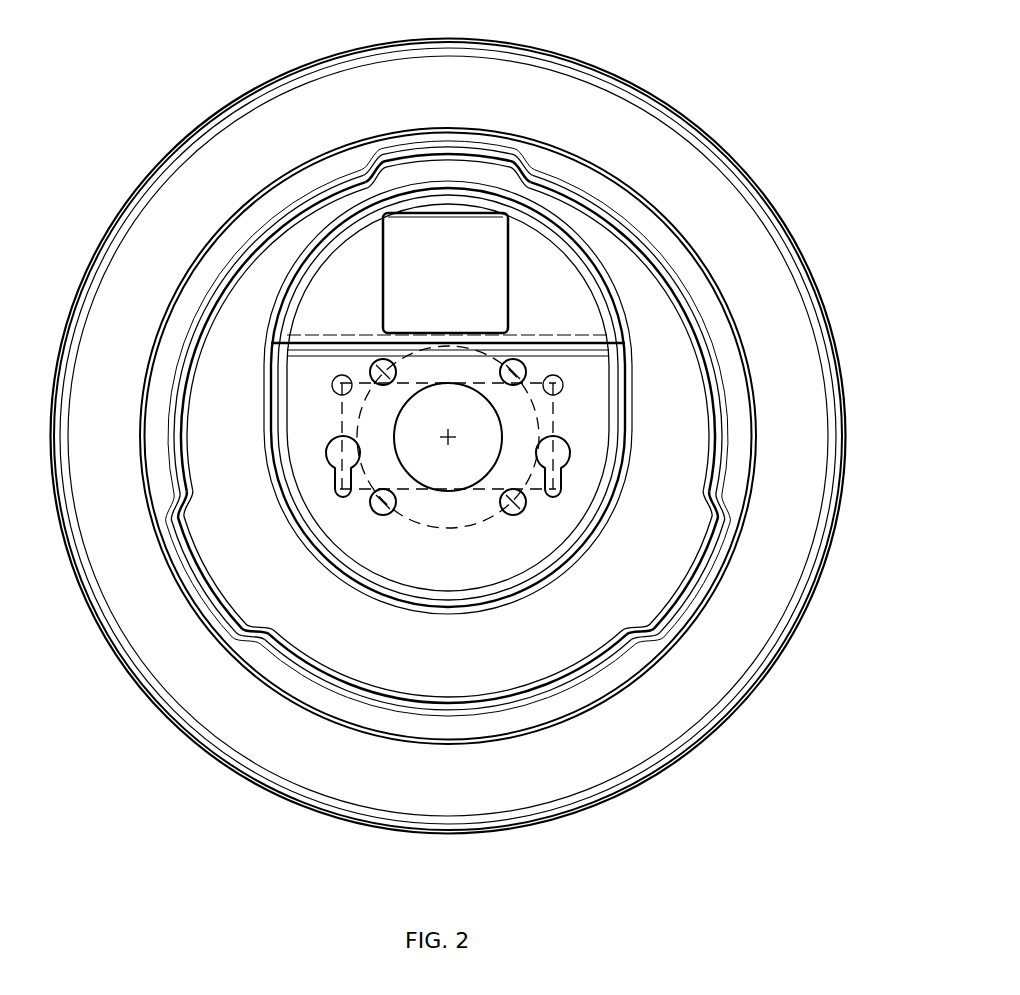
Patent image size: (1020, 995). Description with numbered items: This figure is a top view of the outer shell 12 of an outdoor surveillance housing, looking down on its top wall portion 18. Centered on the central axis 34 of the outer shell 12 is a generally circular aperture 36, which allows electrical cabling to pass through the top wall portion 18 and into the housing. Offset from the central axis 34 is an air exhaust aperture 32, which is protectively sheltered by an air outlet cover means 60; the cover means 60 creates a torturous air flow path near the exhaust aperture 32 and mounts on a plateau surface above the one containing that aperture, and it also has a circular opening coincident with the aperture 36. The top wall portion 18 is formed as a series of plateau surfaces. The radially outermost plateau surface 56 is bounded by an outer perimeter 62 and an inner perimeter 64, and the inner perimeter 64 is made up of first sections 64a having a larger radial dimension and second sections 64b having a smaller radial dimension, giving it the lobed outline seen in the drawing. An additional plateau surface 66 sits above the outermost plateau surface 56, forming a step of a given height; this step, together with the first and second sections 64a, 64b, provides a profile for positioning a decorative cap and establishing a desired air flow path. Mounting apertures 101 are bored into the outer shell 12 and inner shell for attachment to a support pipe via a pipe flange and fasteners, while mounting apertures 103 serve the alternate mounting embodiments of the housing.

The outer shell 12 is at (756, 243).
The top wall portion 18 is at (658, 568).
The air exhaust aperture 32 is at (494, 245).
The central axis 34 is at (450, 440).
The generally circular aperture 36 is at (448, 491).
The plateau surface 56 is at (735, 490).
The air outlet cover means 60 is at (560, 275).
The outer perimeter 62 is at (638, 683).
The inner perimeter 64 is at (585, 722).
The first sections 64a is at (472, 152).
The second sections 64b is at (240, 263).
The additional plateau surface 66 is at (302, 596).
The mounting apertures 101 is at (378, 360).
The mounting apertures 103 is at (345, 439).